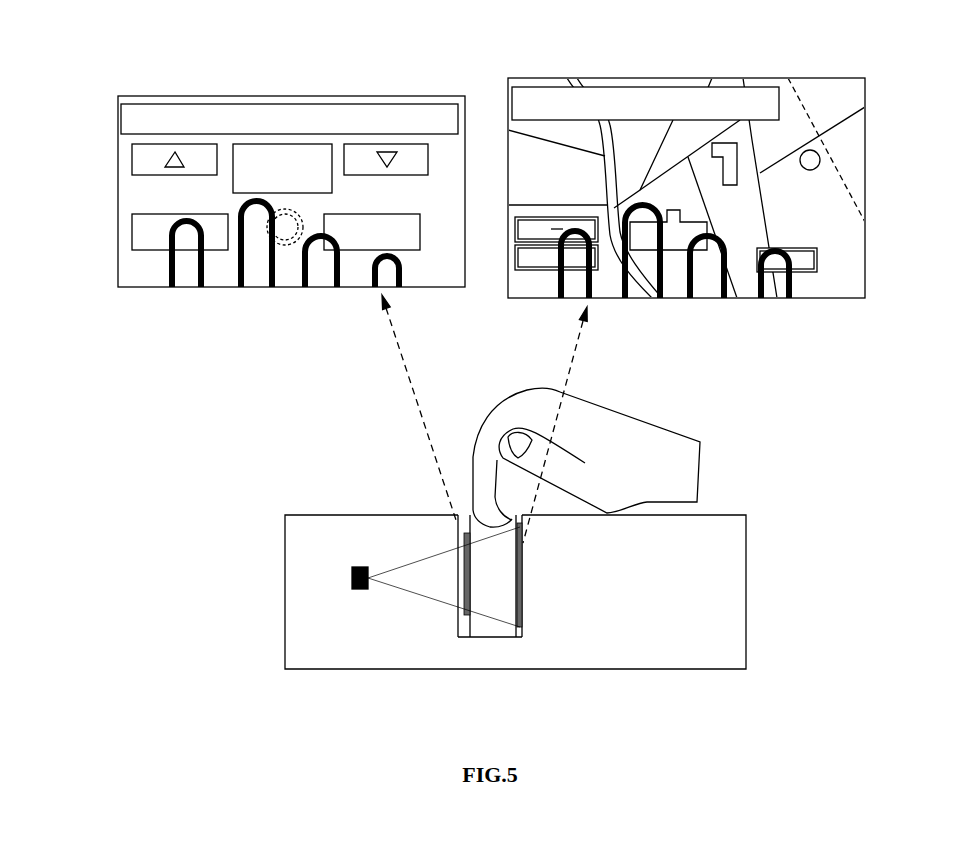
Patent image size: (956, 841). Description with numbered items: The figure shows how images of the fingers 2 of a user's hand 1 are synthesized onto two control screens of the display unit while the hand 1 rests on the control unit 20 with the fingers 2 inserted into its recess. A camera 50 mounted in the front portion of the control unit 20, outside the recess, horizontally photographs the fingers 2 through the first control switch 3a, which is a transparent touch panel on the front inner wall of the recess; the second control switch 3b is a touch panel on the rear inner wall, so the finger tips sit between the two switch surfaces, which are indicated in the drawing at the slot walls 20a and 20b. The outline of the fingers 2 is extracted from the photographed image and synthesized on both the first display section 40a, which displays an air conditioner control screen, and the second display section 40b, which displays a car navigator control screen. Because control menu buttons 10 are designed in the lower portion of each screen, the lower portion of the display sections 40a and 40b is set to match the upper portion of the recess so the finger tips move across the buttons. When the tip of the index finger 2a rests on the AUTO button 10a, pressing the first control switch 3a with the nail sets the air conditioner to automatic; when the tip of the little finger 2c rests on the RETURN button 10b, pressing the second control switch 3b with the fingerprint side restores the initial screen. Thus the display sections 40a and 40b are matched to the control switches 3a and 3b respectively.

The hand 1 is at (662, 430).
The fingers 2 is at (237, 273).
The index finger 2a is at (168, 273).
The little finger 2c is at (790, 288).
The first control switch 3a is at (463, 583).
The second control switch 3b is at (522, 572).
The control menu buttons 10 is at (118, 156).
The AUTO button 10a is at (147, 215).
The RETURN button 10b is at (818, 260).
The control unit 20 is at (746, 603).
The first slot wall 20a is at (467, 625).
The second slot wall 20b is at (522, 598).
The first display section 40a is at (328, 96).
The second display section 40b is at (593, 77).
The camera 50 is at (362, 566).